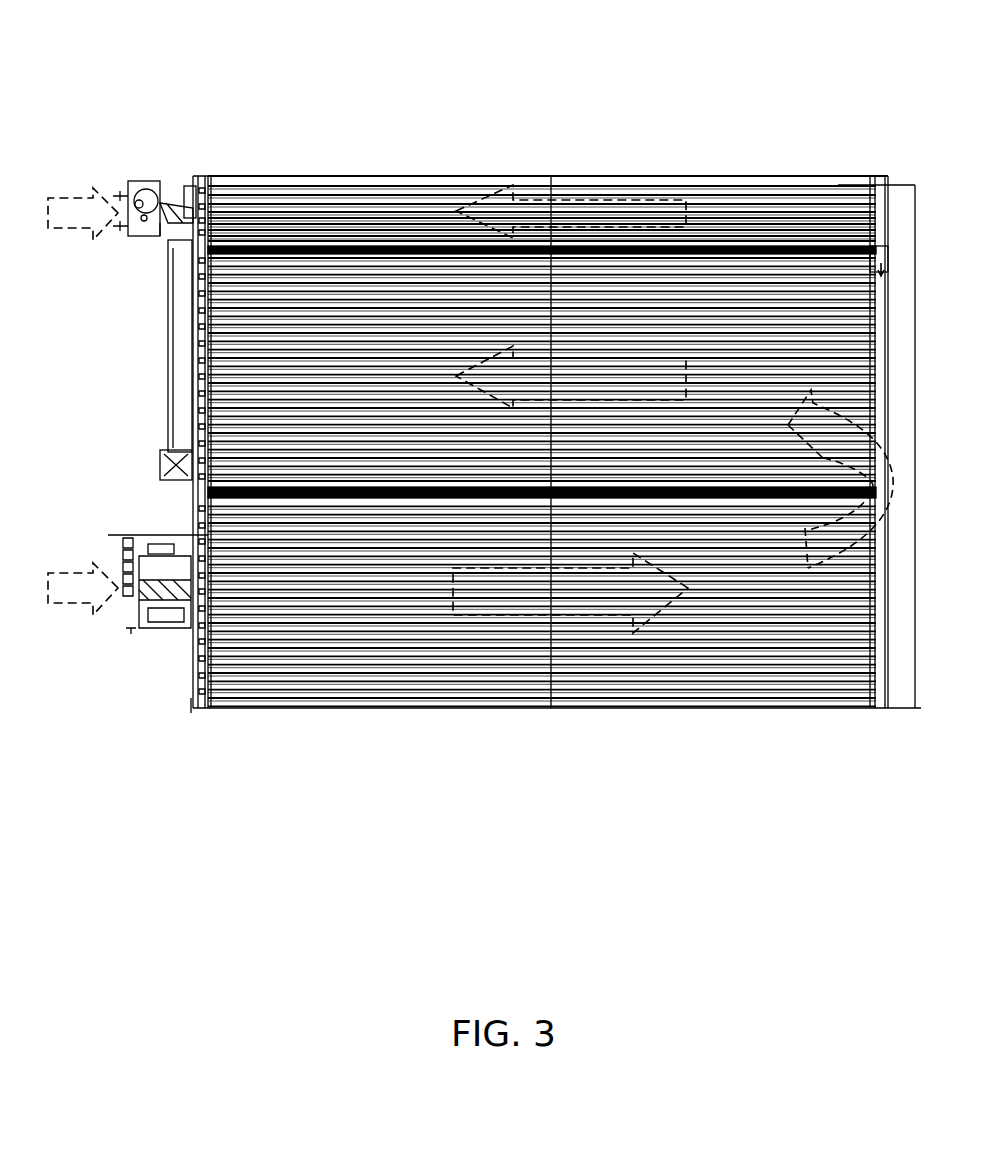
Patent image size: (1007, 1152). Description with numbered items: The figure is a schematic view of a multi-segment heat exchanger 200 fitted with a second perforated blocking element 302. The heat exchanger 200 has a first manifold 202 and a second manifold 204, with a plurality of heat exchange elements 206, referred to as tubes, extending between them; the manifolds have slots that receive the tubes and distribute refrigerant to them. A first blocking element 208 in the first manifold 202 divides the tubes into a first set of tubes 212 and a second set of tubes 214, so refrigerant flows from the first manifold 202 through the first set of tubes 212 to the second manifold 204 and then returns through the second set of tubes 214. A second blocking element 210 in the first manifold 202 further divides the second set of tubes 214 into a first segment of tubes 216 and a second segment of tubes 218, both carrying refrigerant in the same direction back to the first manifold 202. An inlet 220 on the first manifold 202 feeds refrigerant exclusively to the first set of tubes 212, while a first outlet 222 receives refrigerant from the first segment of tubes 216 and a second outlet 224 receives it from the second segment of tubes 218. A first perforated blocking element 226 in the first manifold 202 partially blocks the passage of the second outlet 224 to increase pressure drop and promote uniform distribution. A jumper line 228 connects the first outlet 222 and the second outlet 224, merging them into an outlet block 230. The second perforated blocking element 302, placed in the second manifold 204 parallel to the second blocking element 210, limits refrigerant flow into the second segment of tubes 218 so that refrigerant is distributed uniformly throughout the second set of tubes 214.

The multi-segment heat exchanger 200 is at (682, 780).
The first manifold 202 is at (190, 700).
The second manifold 204 is at (880, 660).
The plurality of heat exchange elements 206 is at (618, 640).
The first blocking element 208 is at (204, 490).
The second blocking element 210 is at (203, 176).
The first set of tubes 212 is at (380, 590).
The second set of tubes 214 is at (697, 318).
The first segment of tubes 216 is at (615, 300).
The second segment of tubes 218 is at (415, 182).
The inlet 220 is at (182, 645).
The first outlet 222 is at (185, 470).
The second outlet 224 is at (177, 190).
The first perforated blocking element 226 is at (186, 176).
The jumper line 228 is at (165, 346).
The outlet block 230 is at (142, 184).
The second perforated blocking element 302 is at (862, 176).